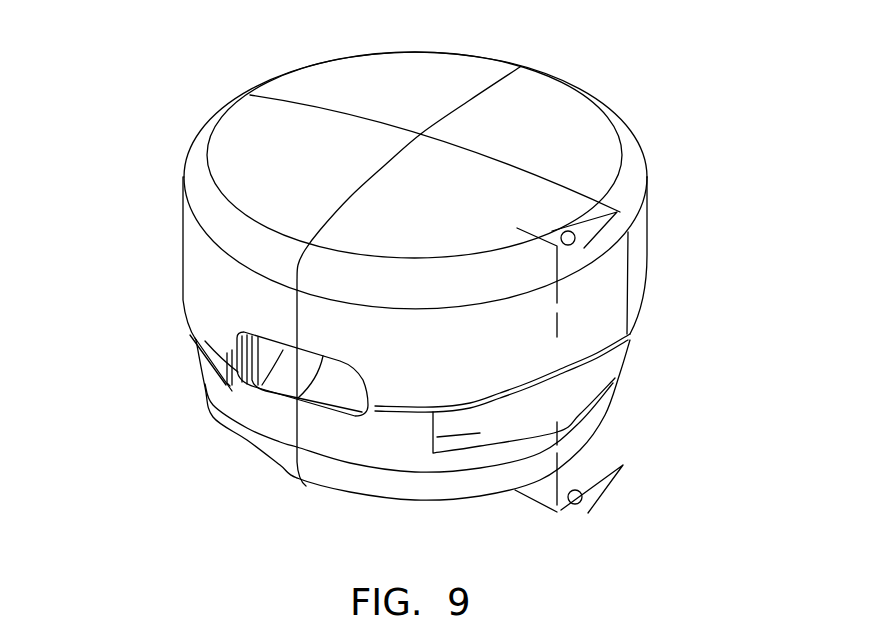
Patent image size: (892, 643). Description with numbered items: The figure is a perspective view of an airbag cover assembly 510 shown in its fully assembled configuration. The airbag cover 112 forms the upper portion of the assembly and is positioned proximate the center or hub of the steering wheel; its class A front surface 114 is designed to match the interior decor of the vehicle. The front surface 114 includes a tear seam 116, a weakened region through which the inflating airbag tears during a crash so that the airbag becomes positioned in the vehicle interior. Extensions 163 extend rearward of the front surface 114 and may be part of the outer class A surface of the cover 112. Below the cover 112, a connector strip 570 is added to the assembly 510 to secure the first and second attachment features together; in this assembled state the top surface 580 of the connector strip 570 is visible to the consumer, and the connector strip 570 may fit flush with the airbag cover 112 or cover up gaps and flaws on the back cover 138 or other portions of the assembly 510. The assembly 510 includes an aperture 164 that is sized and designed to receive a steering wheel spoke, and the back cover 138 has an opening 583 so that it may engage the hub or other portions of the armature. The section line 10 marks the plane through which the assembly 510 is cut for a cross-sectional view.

The assembly 510 is at (157, 166).
The airbag cover 112 is at (640, 241).
The front surface 114 is at (536, 129).
The tear seam 116 is at (483, 90).
The extensions 163 is at (207, 264).
The aperture 164 is at (275, 401).
The connector strip 570 is at (194, 317).
The top surface 580 is at (220, 361).
The opening 583 is at (362, 378).
The back cover 138 is at (410, 461).
The section line 10- 10 is at (566, 381).